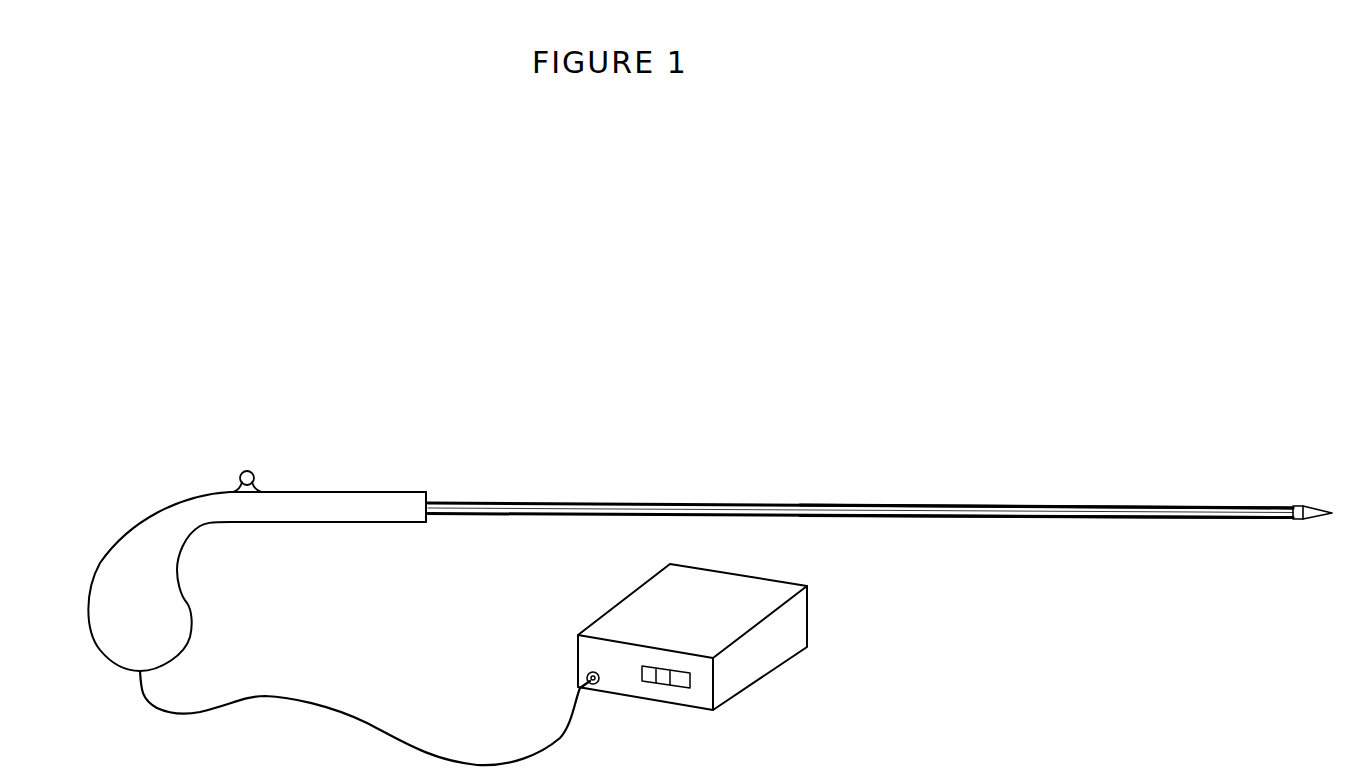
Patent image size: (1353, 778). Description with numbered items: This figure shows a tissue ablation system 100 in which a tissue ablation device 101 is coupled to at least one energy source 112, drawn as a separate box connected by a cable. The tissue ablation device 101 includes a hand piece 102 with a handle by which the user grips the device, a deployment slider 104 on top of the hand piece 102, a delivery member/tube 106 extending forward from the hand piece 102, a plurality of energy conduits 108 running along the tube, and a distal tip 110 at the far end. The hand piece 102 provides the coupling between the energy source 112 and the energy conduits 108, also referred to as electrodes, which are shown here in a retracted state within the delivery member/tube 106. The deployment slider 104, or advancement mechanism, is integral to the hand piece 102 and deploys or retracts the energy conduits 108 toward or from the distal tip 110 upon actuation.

The tissue ablation system 100 is at (517, 313).
The tissue ablation device 101 is at (428, 483).
The hand piece 102 is at (288, 488).
The deployment slider 104 is at (238, 468).
The delivery member/tube 106 is at (478, 497).
The energy conduits 108 is at (1130, 498).
The distal tip 110 is at (1303, 525).
The energy source 112 is at (817, 612).